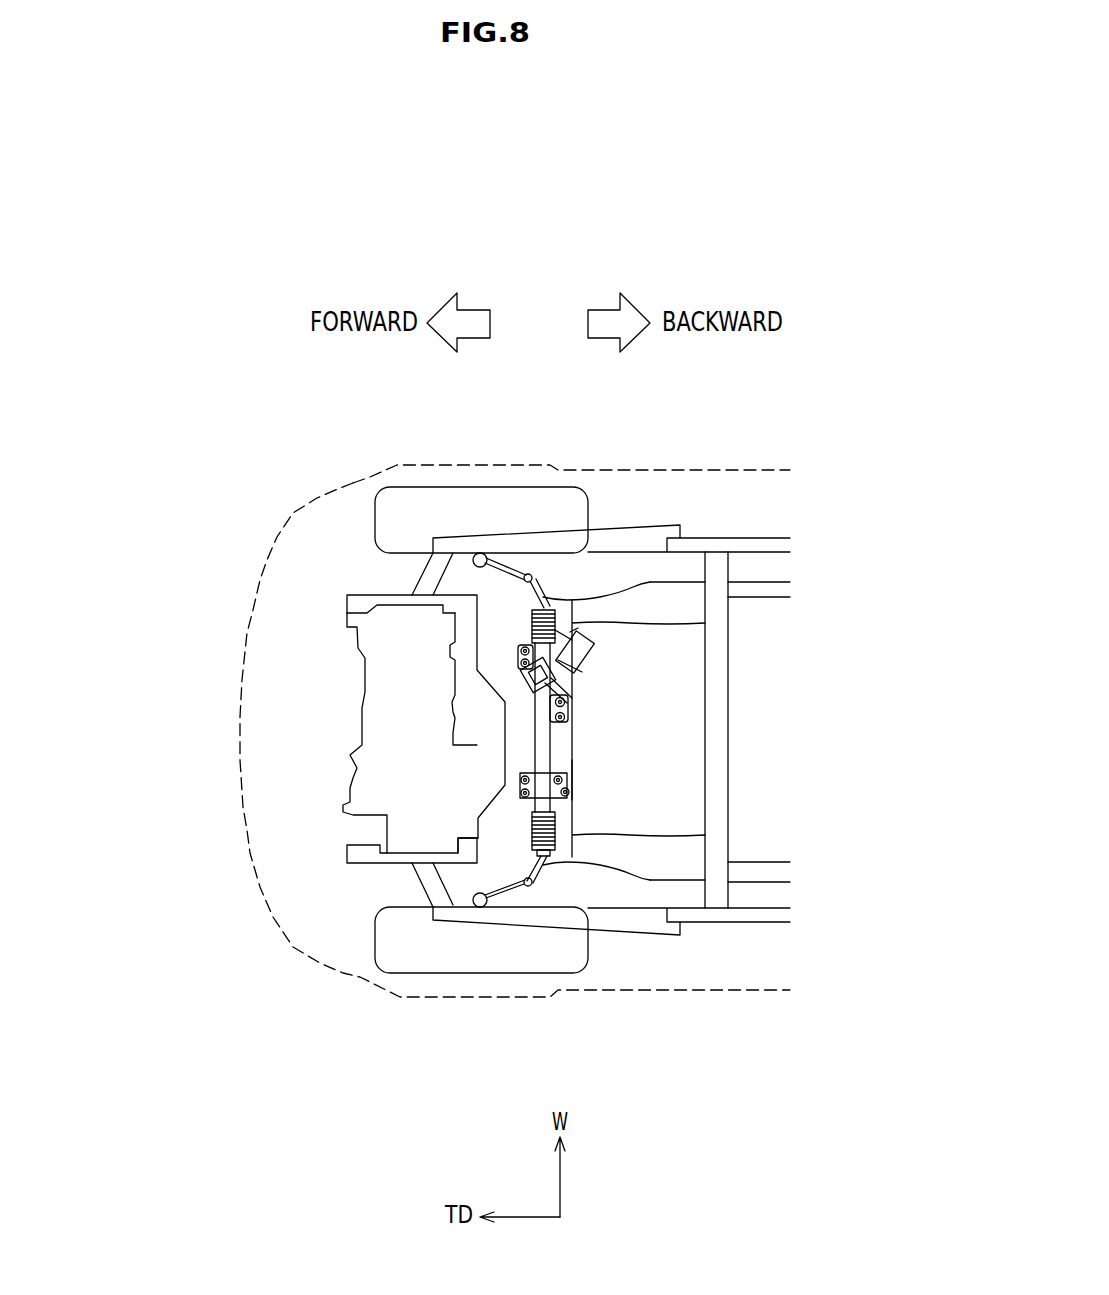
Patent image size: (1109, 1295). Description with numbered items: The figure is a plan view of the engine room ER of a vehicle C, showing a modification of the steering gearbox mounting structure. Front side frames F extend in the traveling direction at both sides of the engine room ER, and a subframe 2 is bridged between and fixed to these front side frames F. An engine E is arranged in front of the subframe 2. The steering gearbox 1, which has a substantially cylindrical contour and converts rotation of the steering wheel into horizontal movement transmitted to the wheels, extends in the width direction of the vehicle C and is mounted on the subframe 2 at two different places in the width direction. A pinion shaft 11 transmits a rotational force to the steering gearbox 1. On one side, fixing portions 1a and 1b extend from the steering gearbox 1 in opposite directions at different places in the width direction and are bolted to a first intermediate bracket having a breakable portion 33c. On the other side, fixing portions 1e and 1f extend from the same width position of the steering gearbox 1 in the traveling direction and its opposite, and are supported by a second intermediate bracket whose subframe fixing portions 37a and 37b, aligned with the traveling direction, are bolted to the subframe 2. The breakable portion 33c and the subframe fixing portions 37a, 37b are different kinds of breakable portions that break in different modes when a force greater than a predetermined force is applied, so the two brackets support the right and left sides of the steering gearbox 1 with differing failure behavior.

The steering gearbox 1 is at (540, 748).
The fixing portion 1a is at (582, 648).
The fixing portion 1b is at (573, 702).
The fixing portion 1e is at (528, 797).
The fixing portion 1f is at (573, 785).
The pinion shaft 11 is at (582, 665).
The breakable portion 33c is at (566, 716).
The subframe fixing portion 37a is at (477, 865).
The subframe fixing portion 37b is at (567, 797).
The subframe 2 is at (449, 893).
The vehicle C is at (353, 483).
The engine E is at (393, 697).
The engine room ER is at (293, 643).
The front side frame F is at (647, 600).